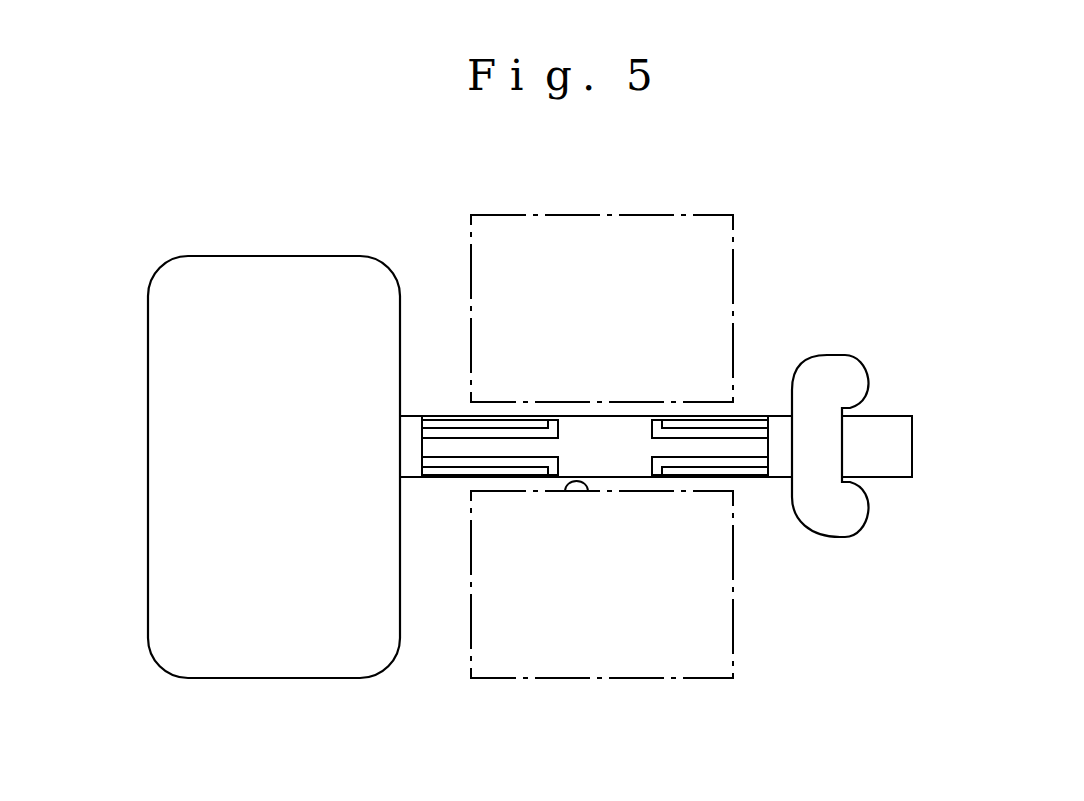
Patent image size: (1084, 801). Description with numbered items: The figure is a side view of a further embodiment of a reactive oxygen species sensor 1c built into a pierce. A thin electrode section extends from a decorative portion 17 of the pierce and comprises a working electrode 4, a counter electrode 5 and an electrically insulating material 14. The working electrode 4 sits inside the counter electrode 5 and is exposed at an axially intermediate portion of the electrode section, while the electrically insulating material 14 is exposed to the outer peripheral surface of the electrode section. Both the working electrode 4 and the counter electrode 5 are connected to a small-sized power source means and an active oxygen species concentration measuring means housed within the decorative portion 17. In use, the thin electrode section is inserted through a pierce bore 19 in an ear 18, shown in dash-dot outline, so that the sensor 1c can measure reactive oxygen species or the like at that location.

The decorative portion 17 is at (163, 388).
The working electrode 4 is at (607, 442).
The counter electrode 5 is at (445, 413).
The electrically insulating material 14 is at (742, 432).
The ear 18 is at (740, 250).
The pierce bore 19 is at (588, 491).
The reactive oxygen species sensor 1c is at (770, 534).